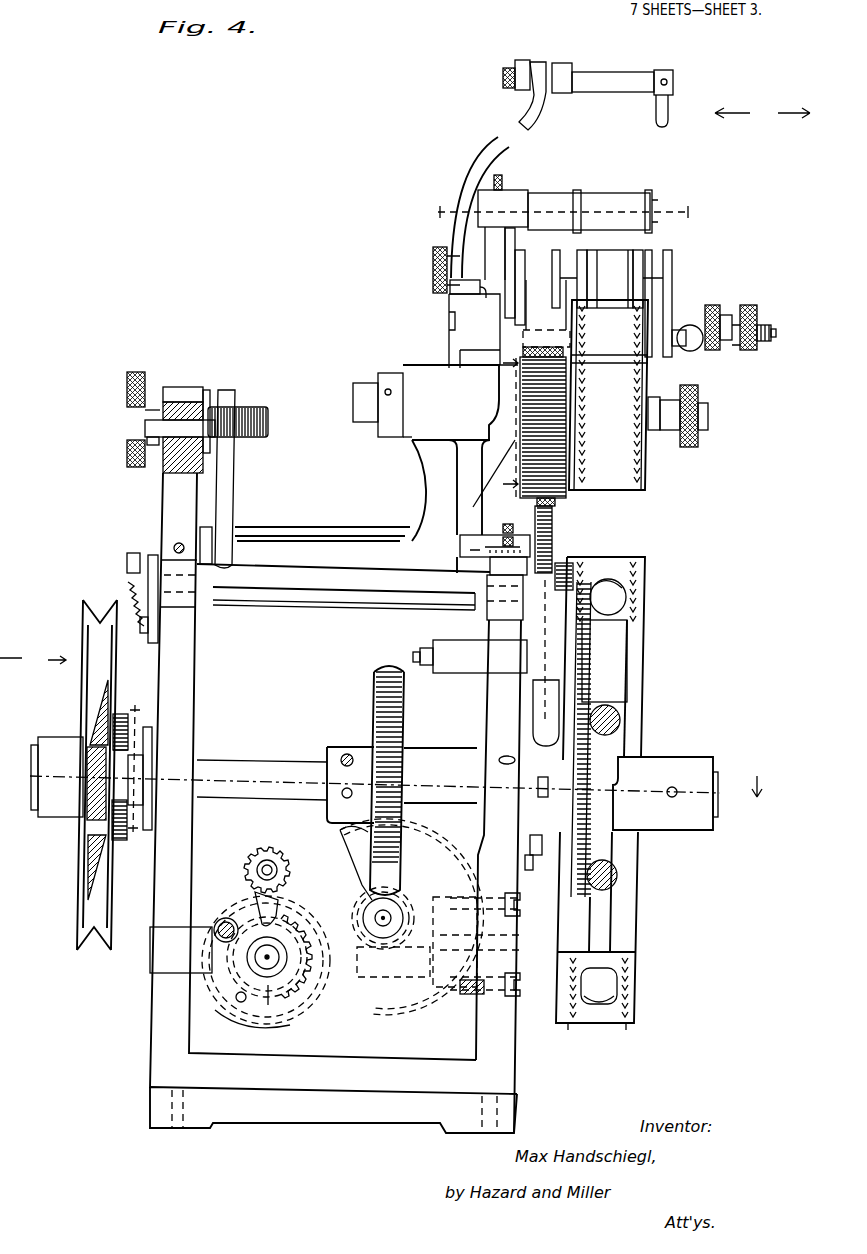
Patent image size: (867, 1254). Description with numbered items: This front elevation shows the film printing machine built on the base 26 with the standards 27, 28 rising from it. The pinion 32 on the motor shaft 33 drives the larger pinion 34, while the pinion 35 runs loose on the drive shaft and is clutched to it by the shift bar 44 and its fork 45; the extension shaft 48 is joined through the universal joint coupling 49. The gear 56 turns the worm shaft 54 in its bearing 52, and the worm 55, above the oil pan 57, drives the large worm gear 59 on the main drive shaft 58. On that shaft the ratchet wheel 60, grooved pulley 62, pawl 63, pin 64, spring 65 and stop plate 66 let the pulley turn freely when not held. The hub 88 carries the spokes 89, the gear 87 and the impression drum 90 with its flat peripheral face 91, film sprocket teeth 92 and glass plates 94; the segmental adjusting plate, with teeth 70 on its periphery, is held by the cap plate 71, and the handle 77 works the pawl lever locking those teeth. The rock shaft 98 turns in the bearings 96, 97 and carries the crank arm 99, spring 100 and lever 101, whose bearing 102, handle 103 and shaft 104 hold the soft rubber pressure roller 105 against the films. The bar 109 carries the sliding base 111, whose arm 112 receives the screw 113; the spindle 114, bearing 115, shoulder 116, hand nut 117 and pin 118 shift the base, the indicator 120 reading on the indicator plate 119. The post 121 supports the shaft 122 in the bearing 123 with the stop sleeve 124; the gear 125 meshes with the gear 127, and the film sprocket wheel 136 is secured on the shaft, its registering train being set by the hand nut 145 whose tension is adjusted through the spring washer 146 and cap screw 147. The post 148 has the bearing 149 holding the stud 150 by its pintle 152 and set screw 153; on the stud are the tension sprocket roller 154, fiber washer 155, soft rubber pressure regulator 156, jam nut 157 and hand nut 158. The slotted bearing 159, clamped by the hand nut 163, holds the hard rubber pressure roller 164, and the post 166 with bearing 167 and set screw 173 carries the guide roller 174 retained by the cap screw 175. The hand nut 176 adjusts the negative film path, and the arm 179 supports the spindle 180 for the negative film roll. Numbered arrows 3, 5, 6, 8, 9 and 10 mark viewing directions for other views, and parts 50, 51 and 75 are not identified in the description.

The spindle 180 is at (600, 86).
The section line 3 is at (762, 114).
The arm 179 is at (480, 153).
The set screw 173 is at (500, 180).
The bearing 167 is at (512, 197).
The guide roller 174 is at (600, 200).
The cap screw 175 is at (653, 205).
The section line 6 is at (561, 212).
The hand nut 163 is at (432, 262).
The post 166 is at (516, 250).
The slotted bearing 159 is at (556, 283).
The hard rubber pressure roller 164 is at (630, 258).
The set screw 153 is at (455, 295).
The pintle 152 is at (449, 322).
The bearing 149 is at (468, 343).
The post 148 is at (490, 373).
The film sprocket wheel 136 is at (645, 465).
The tension sprocket roller 154 is at (642, 320).
The jam nut 157 is at (720, 312).
The hand nut 158 is at (752, 312).
The stud 150 is at (778, 338).
The fiber washer 155 is at (678, 352).
The soft rubber pressure regulator 156 is at (694, 352).
The hand nut 145 is at (699, 393).
The spring washer 146 is at (708, 408).
The cap screw 147 is at (708, 425).
The section line 10 is at (507, 421).
The gear 125 is at (556, 503).
The gear 127 is at (553, 525).
The hand nut 176 is at (127, 385).
The hand nut 117 is at (127, 455).
The smooth spindle 114 is at (173, 404).
The bearing 115 is at (190, 401).
The shoulder 116 is at (207, 397).
The pin 118 is at (153, 462).
The screw 113 is at (267, 426).
The arm 112 is at (233, 481).
The bar 109 is at (206, 548).
The shaft 122 is at (353, 409).
The sleeve 124 is at (380, 431).
The bearing 123 is at (404, 440).
The post 121 is at (421, 477).
The indicator 120 is at (461, 545).
The indicator plate 119 is at (490, 570).
The rock shaft 98 is at (314, 585).
The base 111 is at (329, 606).
The bearing 96 is at (500, 606).
The lever 101 is at (570, 566).
The flat peripheral face 91 is at (606, 579).
The film sprocket teeth 92 is at (640, 562).
The transparent glass plates 94 is at (627, 598).
The soft rubber pressure roller 105 is at (618, 636).
The impression drum 90 is at (646, 695).
The spokes 89 is at (622, 723).
The hub 88 is at (684, 769).
The section line 5 is at (765, 791).
The handle 77 is at (527, 762).
The pawl 75 is at (536, 776).
The handle 103 is at (545, 716).
The bearing 102 is at (446, 675).
The shaft 104 is at (420, 656).
The gear 87 is at (581, 898).
The cap plate 71 is at (536, 852).
The teeth 70 is at (530, 866).
The large worm gear 59 is at (374, 683).
The main drive shaft 58 is at (451, 810).
The standard 27 is at (190, 846).
The bearing 97 is at (196, 606).
The standard 28 is at (478, 862).
The base 26 is at (291, 1124).
The grooved pulley 62 is at (86, 620).
The section line 8 is at (33, 661).
The stop plate 66 is at (38, 760).
The pin 64 is at (89, 796).
The ratchet wheel 60 is at (121, 714).
The spring 65 is at (150, 776).
The pawl 63 is at (152, 797).
The section line 9 is at (133, 780).
The spring 100 is at (130, 606).
The crank arm 99 is at (150, 643).
The pinion 32 is at (263, 849).
The motor shaft 33 is at (280, 859).
The larger pinion 34 is at (258, 897).
The shift bar 44 is at (212, 958).
The extension shaft 48 is at (272, 978).
The pinion 35 is at (274, 977).
The fork 45 is at (240, 1026).
The universal joint coupling 49 is at (269, 1000).
The worm 55 is at (394, 906).
The worm shaft 54 is at (392, 922).
The bearing 52 is at (360, 908).
The gear 56 is at (359, 1015).
The oil pan 57 is at (364, 956).
The slide 50 is at (434, 897).
The bolt 51 is at (472, 996).